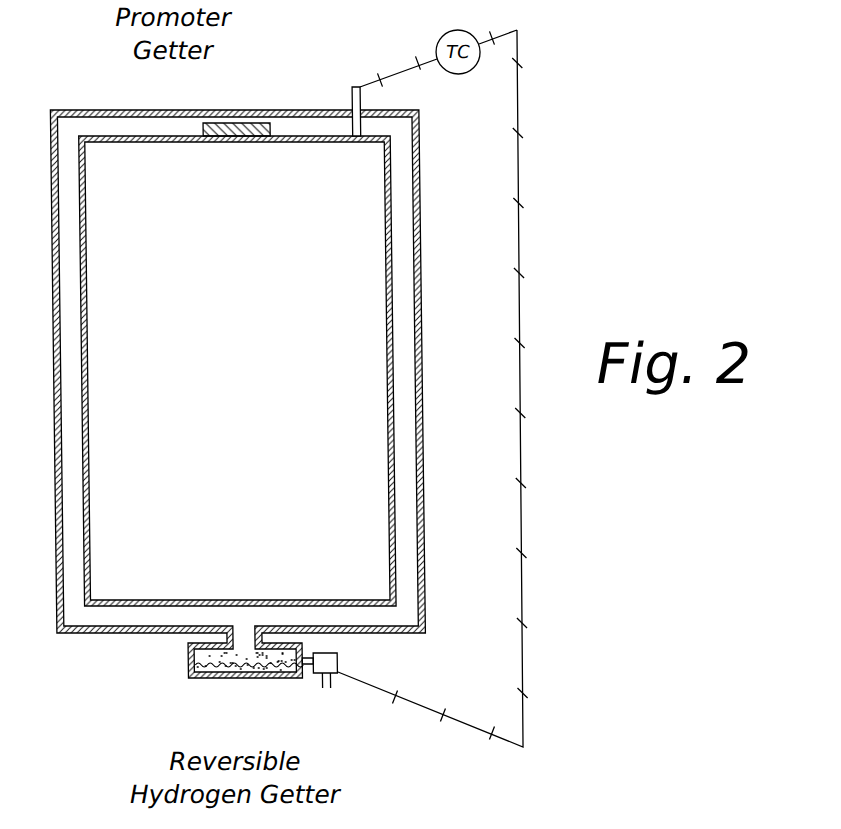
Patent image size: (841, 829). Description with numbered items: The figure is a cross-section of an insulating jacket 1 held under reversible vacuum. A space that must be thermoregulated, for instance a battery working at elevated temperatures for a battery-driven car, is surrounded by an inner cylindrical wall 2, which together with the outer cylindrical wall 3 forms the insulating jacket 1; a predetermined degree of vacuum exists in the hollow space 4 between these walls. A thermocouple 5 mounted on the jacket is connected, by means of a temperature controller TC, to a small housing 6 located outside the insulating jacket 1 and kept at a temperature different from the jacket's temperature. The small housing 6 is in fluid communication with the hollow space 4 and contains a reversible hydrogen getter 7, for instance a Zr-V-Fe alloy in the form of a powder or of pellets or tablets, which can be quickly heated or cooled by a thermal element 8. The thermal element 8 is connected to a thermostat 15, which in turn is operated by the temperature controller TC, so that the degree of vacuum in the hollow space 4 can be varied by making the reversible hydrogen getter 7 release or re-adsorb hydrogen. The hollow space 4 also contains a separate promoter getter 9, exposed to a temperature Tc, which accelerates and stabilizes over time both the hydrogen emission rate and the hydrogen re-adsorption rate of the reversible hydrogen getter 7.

The insulating jacket 1 is at (354, 199).
The inner cylindrical wall 2 is at (390, 240).
The outer cylindrical wall 3 is at (418, 422).
The hollow space 4 is at (401, 298).
The thermocouple 5 is at (351, 100).
The small housing 6 is at (180, 665).
The reversible hydrogen getter 7 is at (224, 673).
The thermal element 8 is at (260, 665).
The promoter getter 9 is at (202, 128).
The thermostat 15 is at (330, 663).